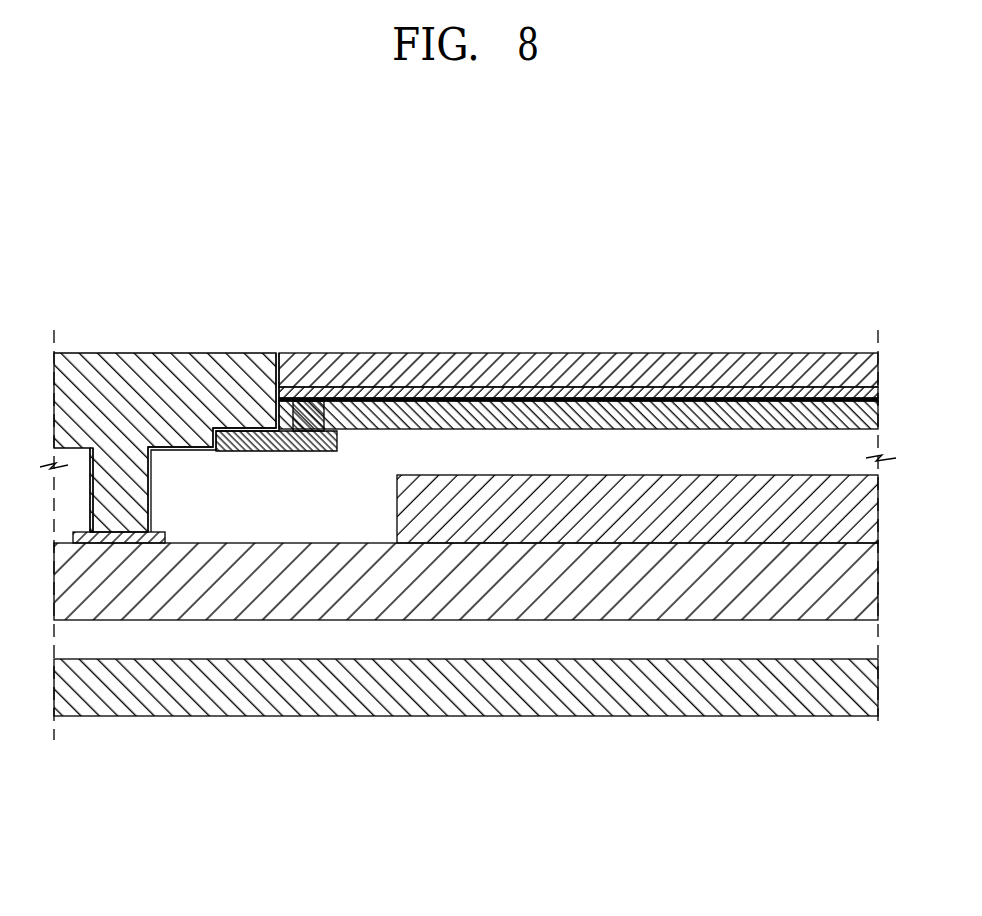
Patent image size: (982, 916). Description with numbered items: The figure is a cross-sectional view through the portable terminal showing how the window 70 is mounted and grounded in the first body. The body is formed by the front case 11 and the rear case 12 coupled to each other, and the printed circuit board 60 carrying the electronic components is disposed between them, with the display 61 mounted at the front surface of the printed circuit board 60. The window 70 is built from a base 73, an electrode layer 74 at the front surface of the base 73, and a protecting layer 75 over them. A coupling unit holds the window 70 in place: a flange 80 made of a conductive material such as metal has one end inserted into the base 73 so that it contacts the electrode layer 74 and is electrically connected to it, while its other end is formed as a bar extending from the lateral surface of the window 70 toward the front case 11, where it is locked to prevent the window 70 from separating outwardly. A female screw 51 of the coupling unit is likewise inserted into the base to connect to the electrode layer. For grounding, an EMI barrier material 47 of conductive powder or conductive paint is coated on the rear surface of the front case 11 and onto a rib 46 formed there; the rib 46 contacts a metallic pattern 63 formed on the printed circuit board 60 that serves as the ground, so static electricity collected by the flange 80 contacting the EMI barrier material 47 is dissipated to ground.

The front case 11 is at (142, 382).
The rear case 12 is at (688, 687).
The rib 46 is at (90, 483).
The EMI barrier material 47 is at (191, 450).
The female screw 51 is at (391, 375).
The printed circuit board 60 is at (505, 585).
The display 61 is at (617, 518).
The metallic pattern 63 is at (120, 537).
The window 70 is at (660, 262).
The base 73 is at (643, 415).
The electrode layer 74 is at (594, 399).
The protecting layer 75 is at (543, 393).
The flange 80 is at (307, 405).